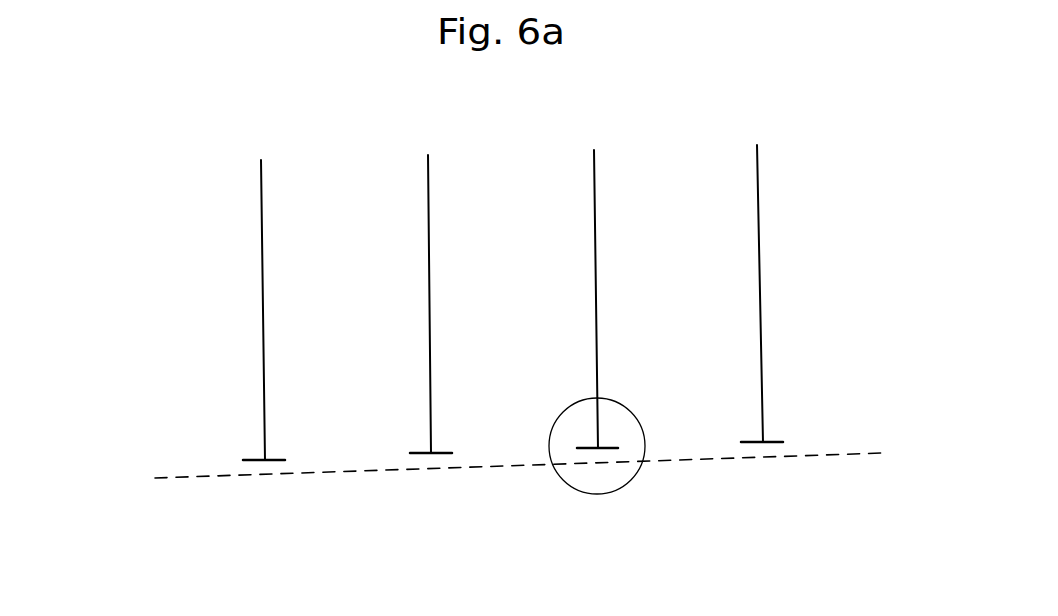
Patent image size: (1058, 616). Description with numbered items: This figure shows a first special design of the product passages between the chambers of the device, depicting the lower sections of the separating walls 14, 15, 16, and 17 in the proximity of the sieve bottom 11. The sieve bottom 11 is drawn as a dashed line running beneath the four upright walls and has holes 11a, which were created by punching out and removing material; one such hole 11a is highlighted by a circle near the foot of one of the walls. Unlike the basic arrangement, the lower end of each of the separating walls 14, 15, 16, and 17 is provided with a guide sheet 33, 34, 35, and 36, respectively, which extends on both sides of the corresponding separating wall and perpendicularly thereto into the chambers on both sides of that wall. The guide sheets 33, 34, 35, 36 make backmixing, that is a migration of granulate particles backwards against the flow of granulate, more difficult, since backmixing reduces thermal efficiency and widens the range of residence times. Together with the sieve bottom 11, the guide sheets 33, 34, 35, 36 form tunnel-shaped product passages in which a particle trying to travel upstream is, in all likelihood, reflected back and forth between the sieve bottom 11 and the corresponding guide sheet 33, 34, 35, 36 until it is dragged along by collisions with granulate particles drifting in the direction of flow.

The sieve bottom 11 is at (518, 519).
The holes 11a is at (578, 494).
The separating wall 14 is at (181, 310).
The separating wall 15 is at (285, 304).
The separating wall 16 is at (736, 299).
The separating wall 17 is at (839, 293).
The guide sheet 33 is at (165, 448).
The guide sheet 34 is at (344, 499).
The guide sheet 35 is at (667, 479).
The guide sheet 36 is at (843, 464).